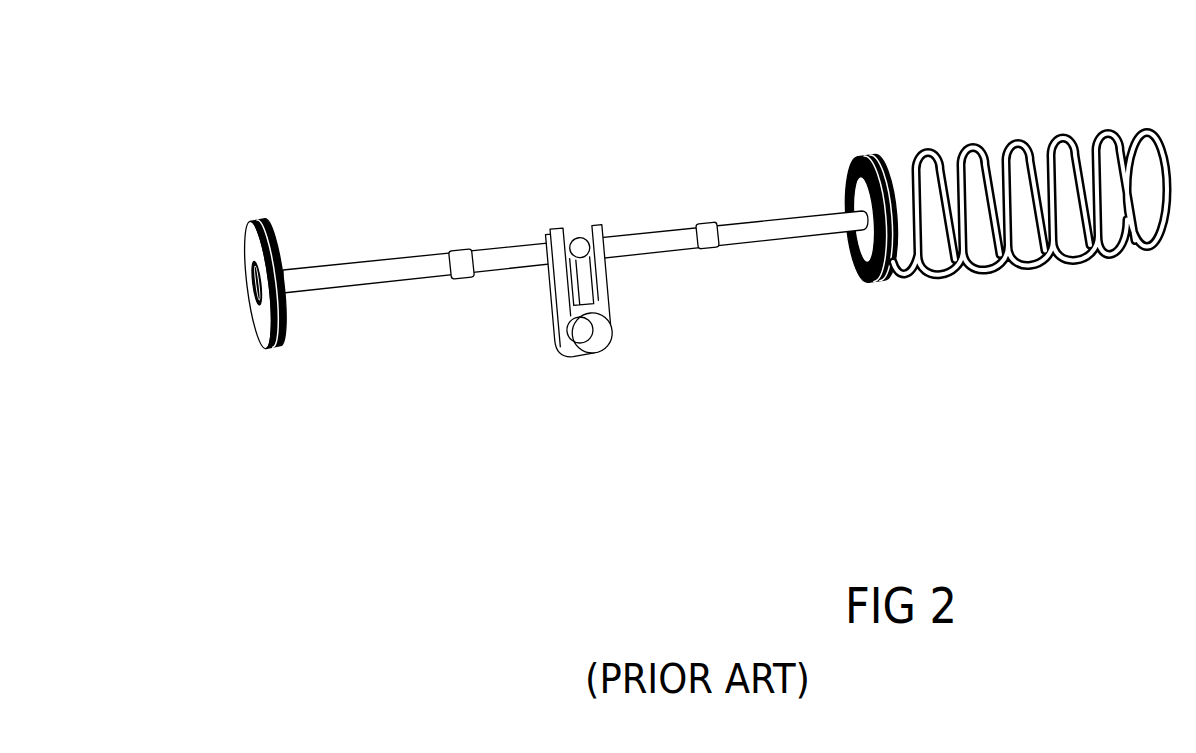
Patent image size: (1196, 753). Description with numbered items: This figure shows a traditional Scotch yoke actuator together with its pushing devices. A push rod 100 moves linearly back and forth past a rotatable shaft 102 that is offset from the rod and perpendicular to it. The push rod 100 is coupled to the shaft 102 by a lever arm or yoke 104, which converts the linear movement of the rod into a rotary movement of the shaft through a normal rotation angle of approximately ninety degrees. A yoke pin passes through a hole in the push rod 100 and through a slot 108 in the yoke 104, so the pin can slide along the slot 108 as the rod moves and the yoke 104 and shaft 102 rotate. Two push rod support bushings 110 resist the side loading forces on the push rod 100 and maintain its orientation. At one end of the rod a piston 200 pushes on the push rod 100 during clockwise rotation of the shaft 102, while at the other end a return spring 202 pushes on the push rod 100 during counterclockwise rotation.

The push rod 100 is at (380, 260).
The rotatable shaft 102 is at (584, 331).
The yoke 104 is at (614, 316).
The slot 108 is at (580, 296).
The push rod support bushing 110 is at (460, 250).
The piston 200 is at (262, 222).
The return spring 202 is at (1017, 144).